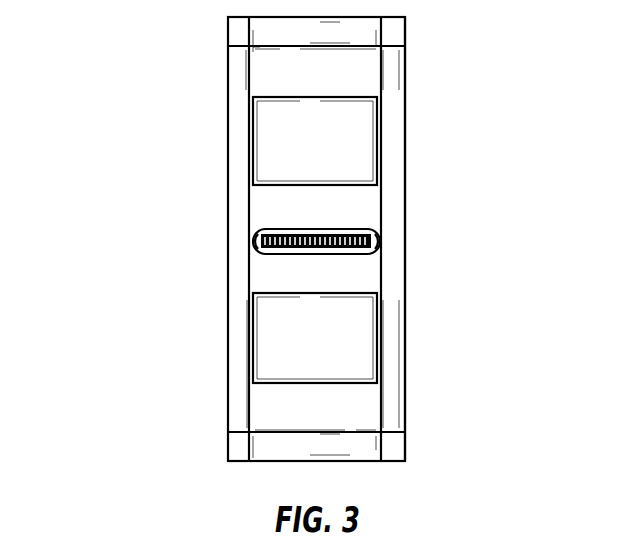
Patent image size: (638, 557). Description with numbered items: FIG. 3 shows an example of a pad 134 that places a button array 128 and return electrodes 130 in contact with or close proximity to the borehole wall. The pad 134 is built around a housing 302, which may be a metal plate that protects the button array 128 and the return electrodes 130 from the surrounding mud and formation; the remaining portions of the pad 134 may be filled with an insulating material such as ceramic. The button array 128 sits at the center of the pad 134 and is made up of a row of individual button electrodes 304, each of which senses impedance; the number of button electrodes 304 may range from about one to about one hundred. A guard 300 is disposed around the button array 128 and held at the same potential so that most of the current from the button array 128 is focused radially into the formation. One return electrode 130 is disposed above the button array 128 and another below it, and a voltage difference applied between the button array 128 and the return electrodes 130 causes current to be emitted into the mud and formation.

The pad 134 is at (161, 84).
The housing 302 is at (412, 35).
The return electrode 130 is at (365, 142).
The button array 128 is at (274, 220).
The guard 300 is at (266, 254).
The button electrode 304 is at (363, 249).